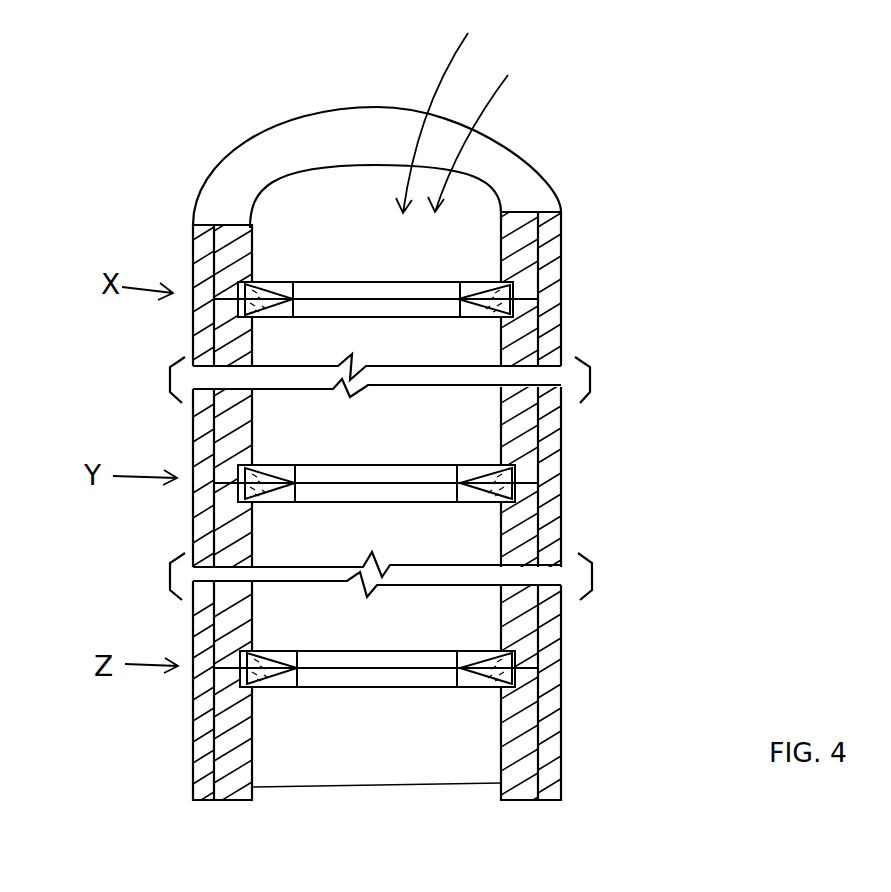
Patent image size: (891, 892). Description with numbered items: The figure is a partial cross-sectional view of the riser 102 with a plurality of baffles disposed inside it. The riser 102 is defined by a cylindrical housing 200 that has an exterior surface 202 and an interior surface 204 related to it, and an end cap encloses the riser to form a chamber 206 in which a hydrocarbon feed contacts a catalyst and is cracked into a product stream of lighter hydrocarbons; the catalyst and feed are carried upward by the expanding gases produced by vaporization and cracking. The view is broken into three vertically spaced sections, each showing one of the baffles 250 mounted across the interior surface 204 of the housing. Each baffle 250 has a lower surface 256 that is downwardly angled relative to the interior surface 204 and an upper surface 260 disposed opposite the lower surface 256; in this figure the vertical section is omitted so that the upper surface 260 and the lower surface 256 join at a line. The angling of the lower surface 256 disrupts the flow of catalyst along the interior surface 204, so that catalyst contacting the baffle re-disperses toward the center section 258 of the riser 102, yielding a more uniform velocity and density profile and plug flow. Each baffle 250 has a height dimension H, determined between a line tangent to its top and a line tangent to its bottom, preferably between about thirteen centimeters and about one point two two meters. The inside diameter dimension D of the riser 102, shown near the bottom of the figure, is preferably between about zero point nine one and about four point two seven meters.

The riser 102 is at (532, 190).
The cylindrical housing 200 is at (487, 153).
The exterior surface 202 is at (560, 268).
The interior surface 204 is at (320, 196).
The chamber 206 is at (460, 113).
The center section 258 is at (496, 128).
The baffle 250 is at (430, 282).
The upper surface 260 is at (308, 288).
The lower surface 256 is at (343, 309).
The height dimension H is at (457, 310).
The inside diameter dimension D is at (370, 787).